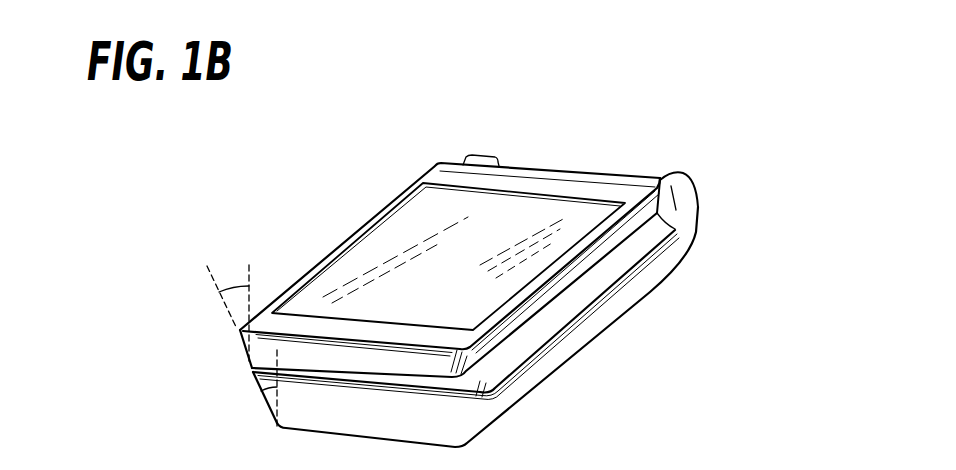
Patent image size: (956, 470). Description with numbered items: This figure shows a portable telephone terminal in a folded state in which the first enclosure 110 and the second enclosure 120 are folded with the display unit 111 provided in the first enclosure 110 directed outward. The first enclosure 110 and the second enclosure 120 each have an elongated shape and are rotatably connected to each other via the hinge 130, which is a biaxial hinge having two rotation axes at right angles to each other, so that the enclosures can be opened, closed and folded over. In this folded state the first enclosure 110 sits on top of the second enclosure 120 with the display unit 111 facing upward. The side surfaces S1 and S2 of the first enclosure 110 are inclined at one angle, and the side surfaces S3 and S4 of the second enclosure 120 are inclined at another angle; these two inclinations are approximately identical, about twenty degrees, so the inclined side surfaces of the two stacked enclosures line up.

The first enclosure 110 is at (323, 330).
The display unit 111 is at (390, 241).
The second enclosure 120 is at (567, 342).
The hinge 130 is at (673, 195).
The side surface S1 is at (240, 351).
The side surface S2 is at (603, 247).
The side surface S3 is at (513, 388).
The side surface S4 is at (268, 404).